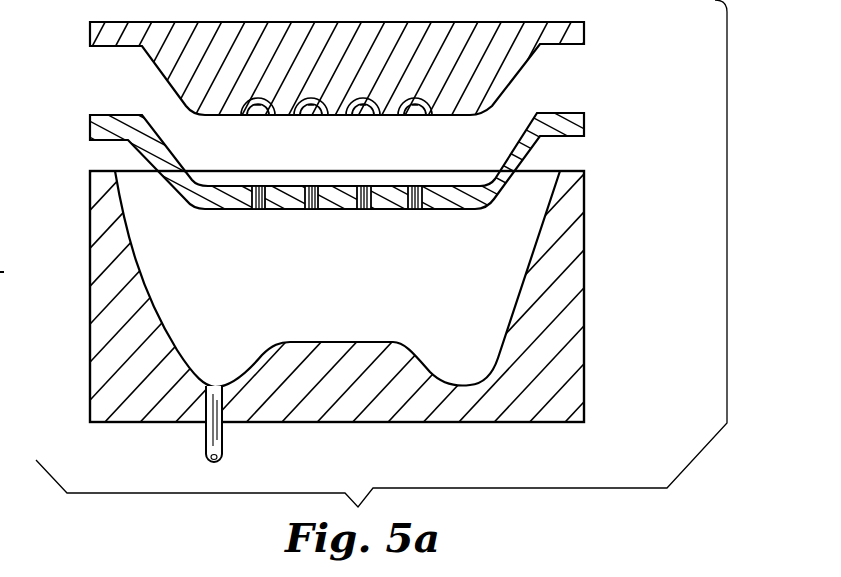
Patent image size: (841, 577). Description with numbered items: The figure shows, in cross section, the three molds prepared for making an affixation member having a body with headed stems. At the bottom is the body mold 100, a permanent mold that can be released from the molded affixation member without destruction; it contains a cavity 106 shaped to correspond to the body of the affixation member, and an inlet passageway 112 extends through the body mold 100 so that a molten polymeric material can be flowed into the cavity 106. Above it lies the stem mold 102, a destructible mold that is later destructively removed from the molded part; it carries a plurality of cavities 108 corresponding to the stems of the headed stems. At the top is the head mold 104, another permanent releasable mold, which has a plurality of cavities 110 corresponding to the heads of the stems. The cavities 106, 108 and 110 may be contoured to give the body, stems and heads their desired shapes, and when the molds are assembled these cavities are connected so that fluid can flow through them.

The body mold 100 is at (580, 256).
The stem mold 102 is at (585, 120).
The head mold 104 is at (586, 30).
The cavity 106 is at (492, 355).
The cavities 108 is at (418, 188).
The cavities 110 is at (302, 117).
The inlet passageway 112 is at (205, 438).